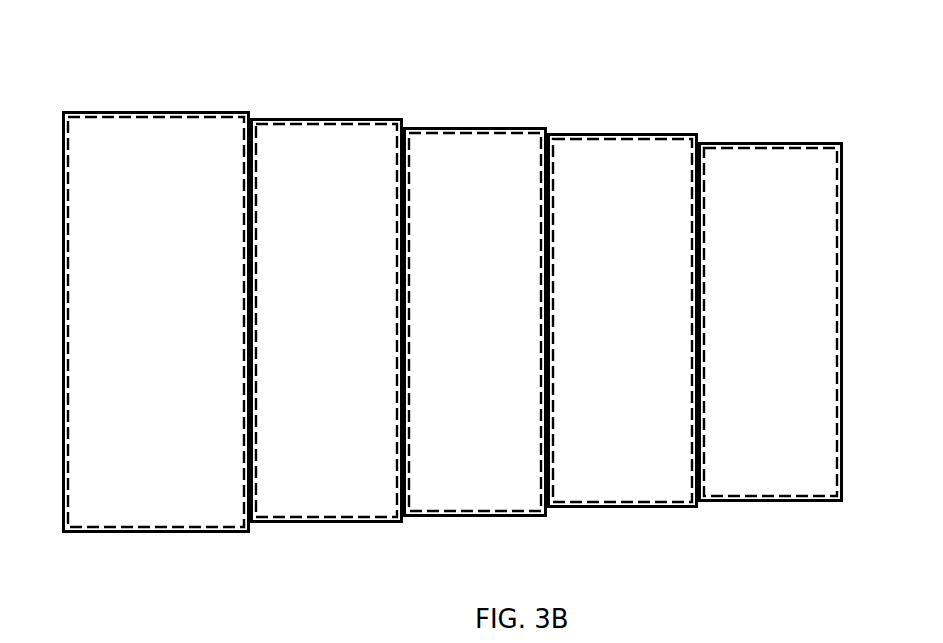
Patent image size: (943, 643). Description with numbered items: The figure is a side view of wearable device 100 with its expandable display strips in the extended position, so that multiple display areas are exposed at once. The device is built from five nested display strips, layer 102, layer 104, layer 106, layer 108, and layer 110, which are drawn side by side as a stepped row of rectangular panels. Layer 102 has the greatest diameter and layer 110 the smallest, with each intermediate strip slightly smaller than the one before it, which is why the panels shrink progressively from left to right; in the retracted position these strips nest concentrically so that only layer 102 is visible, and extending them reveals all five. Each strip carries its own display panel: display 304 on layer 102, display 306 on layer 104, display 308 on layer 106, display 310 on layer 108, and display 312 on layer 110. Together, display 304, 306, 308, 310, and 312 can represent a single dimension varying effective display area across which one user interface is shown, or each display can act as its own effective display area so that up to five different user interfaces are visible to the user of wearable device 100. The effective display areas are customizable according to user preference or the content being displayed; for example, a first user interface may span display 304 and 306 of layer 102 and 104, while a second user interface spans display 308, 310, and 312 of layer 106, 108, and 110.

The wearable device 100 is at (105, 104).
The layer 102 is at (163, 110).
The layer 104 is at (330, 118).
The layer 106 is at (470, 127).
The layer 108 is at (617, 134).
The layer 110 is at (767, 142).
The display 304 is at (180, 319).
The display 306 is at (345, 318).
The display 308 is at (493, 321).
The display 310 is at (647, 318).
The display 312 is at (792, 321).